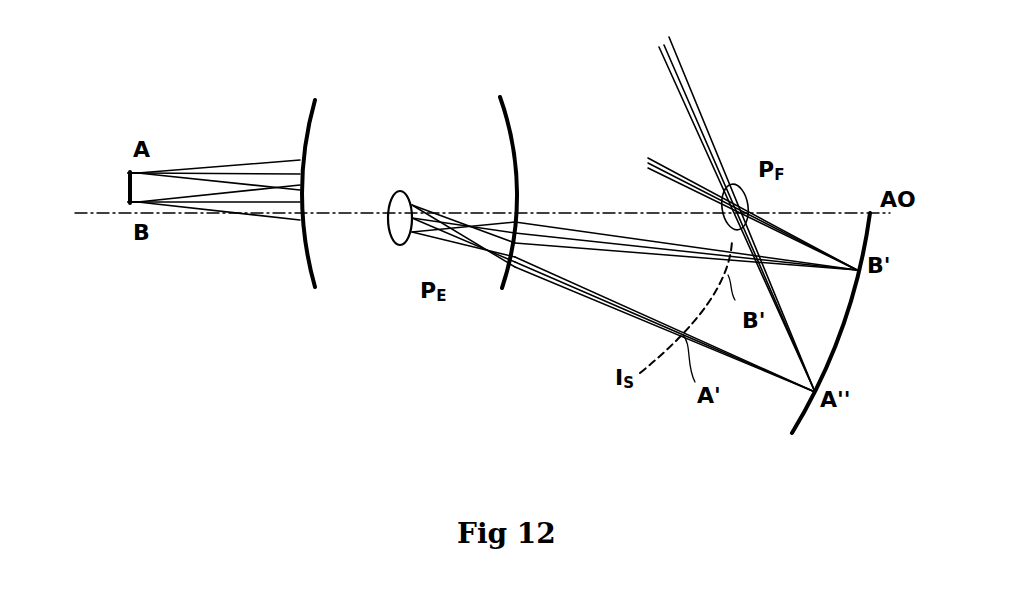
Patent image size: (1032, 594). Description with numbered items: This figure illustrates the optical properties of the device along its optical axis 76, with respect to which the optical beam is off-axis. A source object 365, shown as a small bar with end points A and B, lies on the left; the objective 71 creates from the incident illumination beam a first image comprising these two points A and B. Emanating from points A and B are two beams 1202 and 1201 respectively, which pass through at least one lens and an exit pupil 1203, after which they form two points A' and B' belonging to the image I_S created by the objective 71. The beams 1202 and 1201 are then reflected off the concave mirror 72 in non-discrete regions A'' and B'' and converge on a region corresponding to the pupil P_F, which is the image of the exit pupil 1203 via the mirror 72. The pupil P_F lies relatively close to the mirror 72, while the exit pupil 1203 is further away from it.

The object / field source (A-B) 365 is at (120, 180).
The beam emanating from point A 1202 is at (243, 158).
The beam emanating from point B 1201 is at (198, 208).
The optical axis 76 is at (88, 213).
The objective 71 is at (300, 253).
The exit pupil 1203 is at (397, 243).
The mirror 72 is at (848, 312).